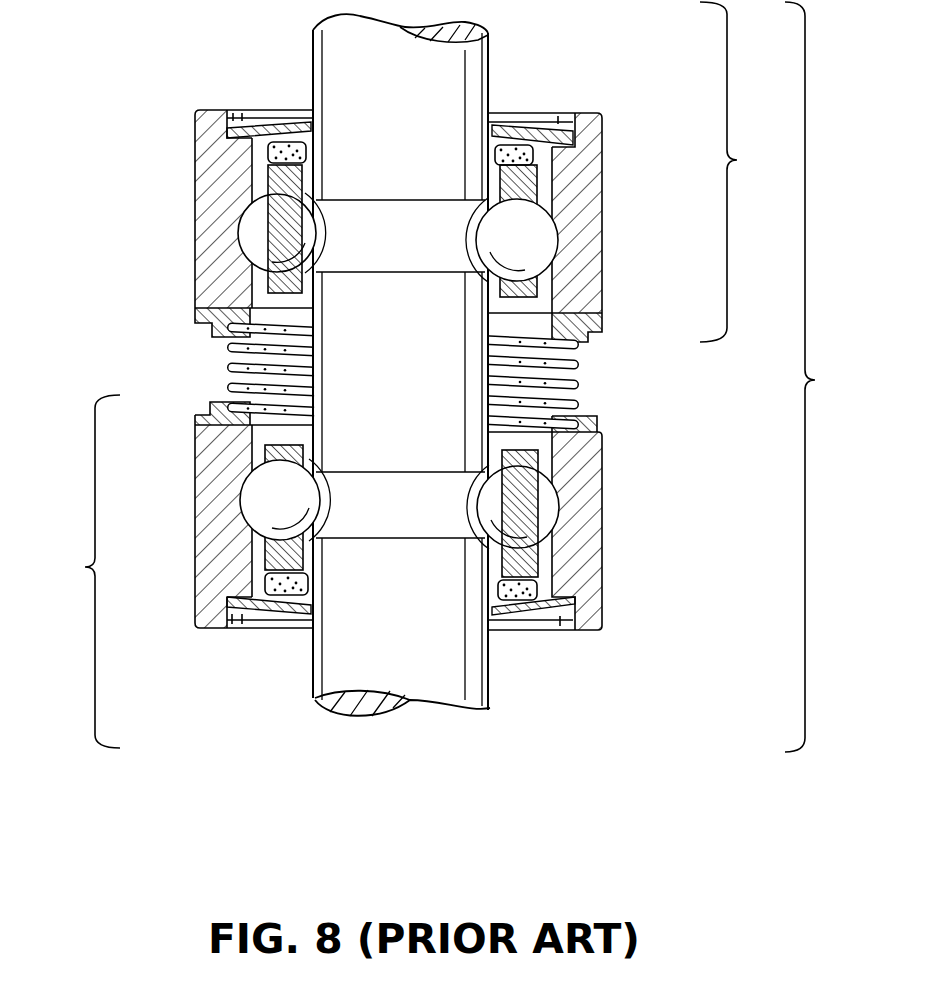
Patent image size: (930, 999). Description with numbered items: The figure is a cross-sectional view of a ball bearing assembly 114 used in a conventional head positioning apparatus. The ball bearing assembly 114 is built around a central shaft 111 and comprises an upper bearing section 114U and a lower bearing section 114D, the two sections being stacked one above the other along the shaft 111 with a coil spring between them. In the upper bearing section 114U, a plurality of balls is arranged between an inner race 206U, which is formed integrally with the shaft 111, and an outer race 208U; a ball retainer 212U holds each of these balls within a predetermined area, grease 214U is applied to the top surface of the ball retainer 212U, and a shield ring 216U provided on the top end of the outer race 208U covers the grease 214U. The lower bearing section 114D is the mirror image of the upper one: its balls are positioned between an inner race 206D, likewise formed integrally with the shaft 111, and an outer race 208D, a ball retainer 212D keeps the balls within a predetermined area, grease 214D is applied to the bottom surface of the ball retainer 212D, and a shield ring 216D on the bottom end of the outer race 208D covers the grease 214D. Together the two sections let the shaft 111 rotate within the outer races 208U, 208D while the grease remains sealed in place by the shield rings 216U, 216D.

The shaft 111 is at (447, 692).
The ball bearing assembly 114 is at (860, 400).
The upper bearing section 114U is at (793, 175).
The lower bearing section 114D is at (80, 584).
The inner race 206U is at (417, 227).
The inner race 206D is at (423, 522).
The outer race 208U is at (592, 278).
The outer race 208D is at (208, 445).
The ball retainer 212U is at (283, 187).
The ball retainer 212D is at (273, 565).
The grease 214U is at (533, 157).
The grease 214D is at (268, 583).
The shield ring 216U is at (528, 127).
The shield ring 216D is at (272, 612).